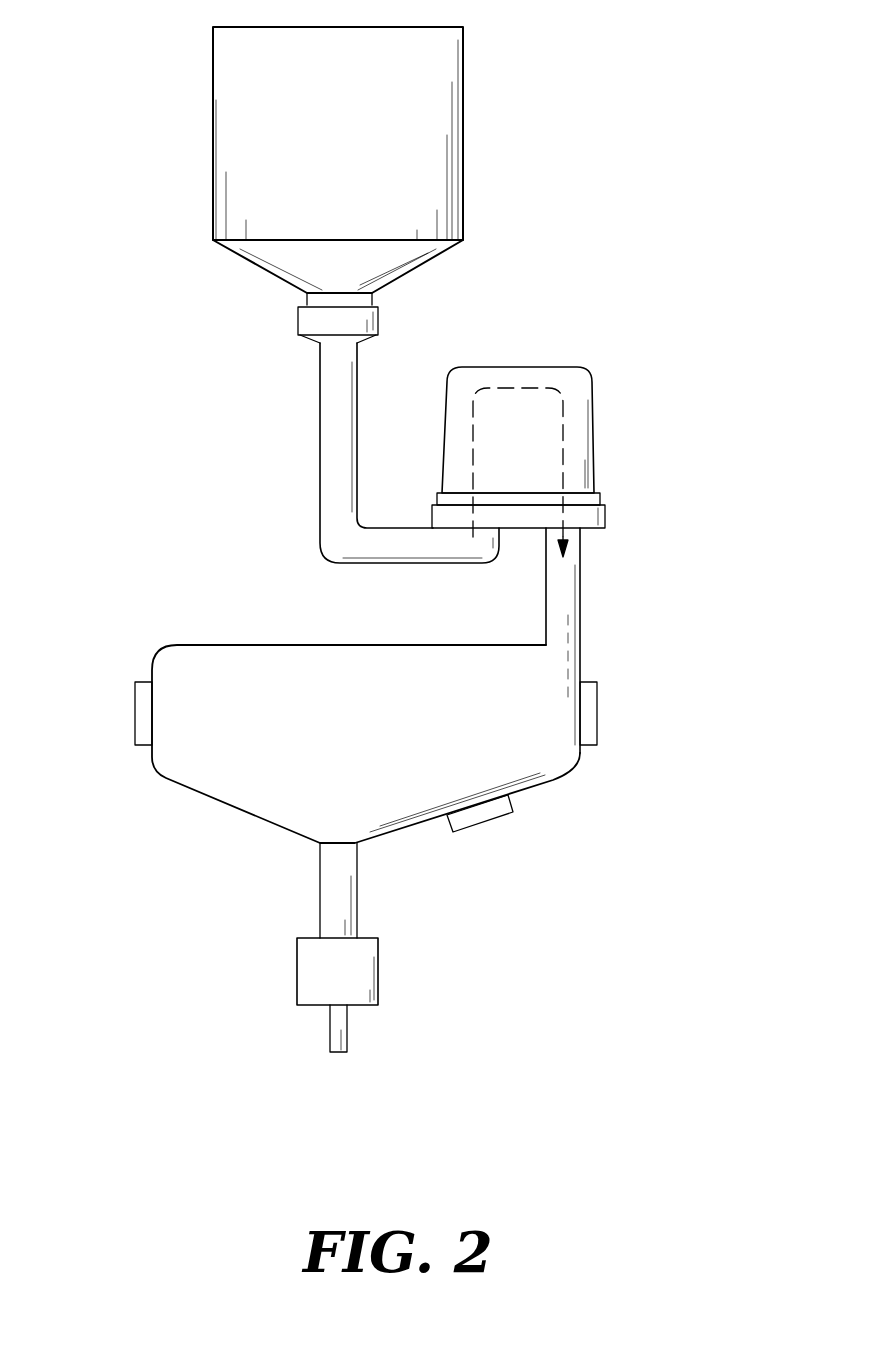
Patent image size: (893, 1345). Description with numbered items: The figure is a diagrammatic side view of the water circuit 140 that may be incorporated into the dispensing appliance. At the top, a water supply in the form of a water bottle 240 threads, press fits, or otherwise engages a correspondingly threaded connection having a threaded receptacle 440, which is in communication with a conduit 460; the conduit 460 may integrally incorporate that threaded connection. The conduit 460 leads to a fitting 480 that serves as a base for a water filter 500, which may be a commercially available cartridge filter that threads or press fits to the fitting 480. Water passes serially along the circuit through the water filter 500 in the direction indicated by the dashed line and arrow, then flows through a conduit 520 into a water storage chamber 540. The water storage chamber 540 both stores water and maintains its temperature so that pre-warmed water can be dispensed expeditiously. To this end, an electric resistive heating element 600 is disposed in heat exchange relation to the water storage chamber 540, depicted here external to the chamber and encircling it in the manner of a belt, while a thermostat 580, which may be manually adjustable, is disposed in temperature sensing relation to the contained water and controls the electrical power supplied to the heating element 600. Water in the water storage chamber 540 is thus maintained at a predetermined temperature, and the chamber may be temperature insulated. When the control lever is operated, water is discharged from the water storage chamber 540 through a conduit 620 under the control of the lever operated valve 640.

The water bottle 240 is at (348, 143).
The threaded receptacle 440 is at (378, 320).
The conduit 460 is at (320, 415).
The fitting 480 is at (605, 517).
The water filter 500 is at (538, 388).
The conduit 520 is at (581, 608).
The water storage chamber 540 is at (319, 757).
The thermostat 580 is at (495, 818).
The electric resistive heating element 600 is at (135, 697).
The conduit 620 is at (357, 915).
The lever operated valve 640 is at (297, 957).
The fluid assembly 140 is at (237, 1038).